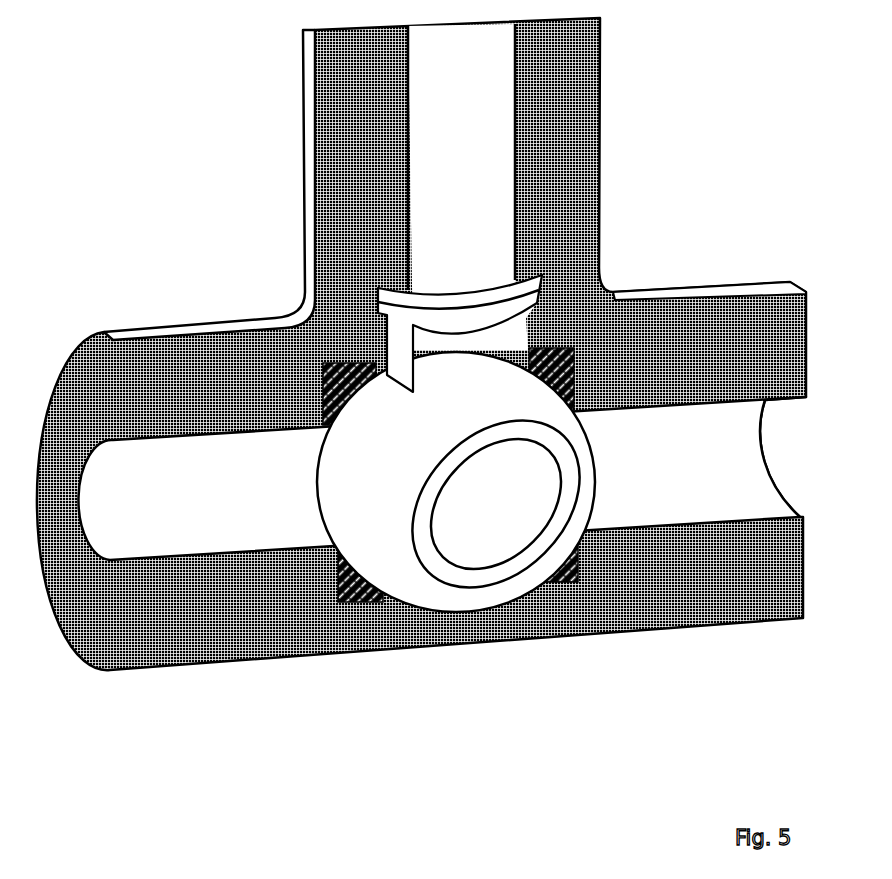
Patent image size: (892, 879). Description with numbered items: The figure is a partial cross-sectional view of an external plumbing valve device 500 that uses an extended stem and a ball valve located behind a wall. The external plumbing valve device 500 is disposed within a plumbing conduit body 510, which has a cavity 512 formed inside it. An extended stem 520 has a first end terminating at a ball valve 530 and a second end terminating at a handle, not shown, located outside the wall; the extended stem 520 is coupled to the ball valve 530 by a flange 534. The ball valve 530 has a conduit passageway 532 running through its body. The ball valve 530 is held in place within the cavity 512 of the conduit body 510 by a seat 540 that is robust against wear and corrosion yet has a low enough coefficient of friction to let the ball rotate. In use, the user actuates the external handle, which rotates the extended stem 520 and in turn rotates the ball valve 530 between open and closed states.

The external plumbing valve device 500 is at (421, 434).
The plumbing conduit body 510 is at (178, 362).
The cavity 512 is at (255, 523).
The extended stem 520 is at (480, 140).
The ball valve 530 is at (488, 597).
The conduit passageway 532 is at (513, 510).
The flange 534 is at (397, 308).
The seat 540 is at (570, 347).